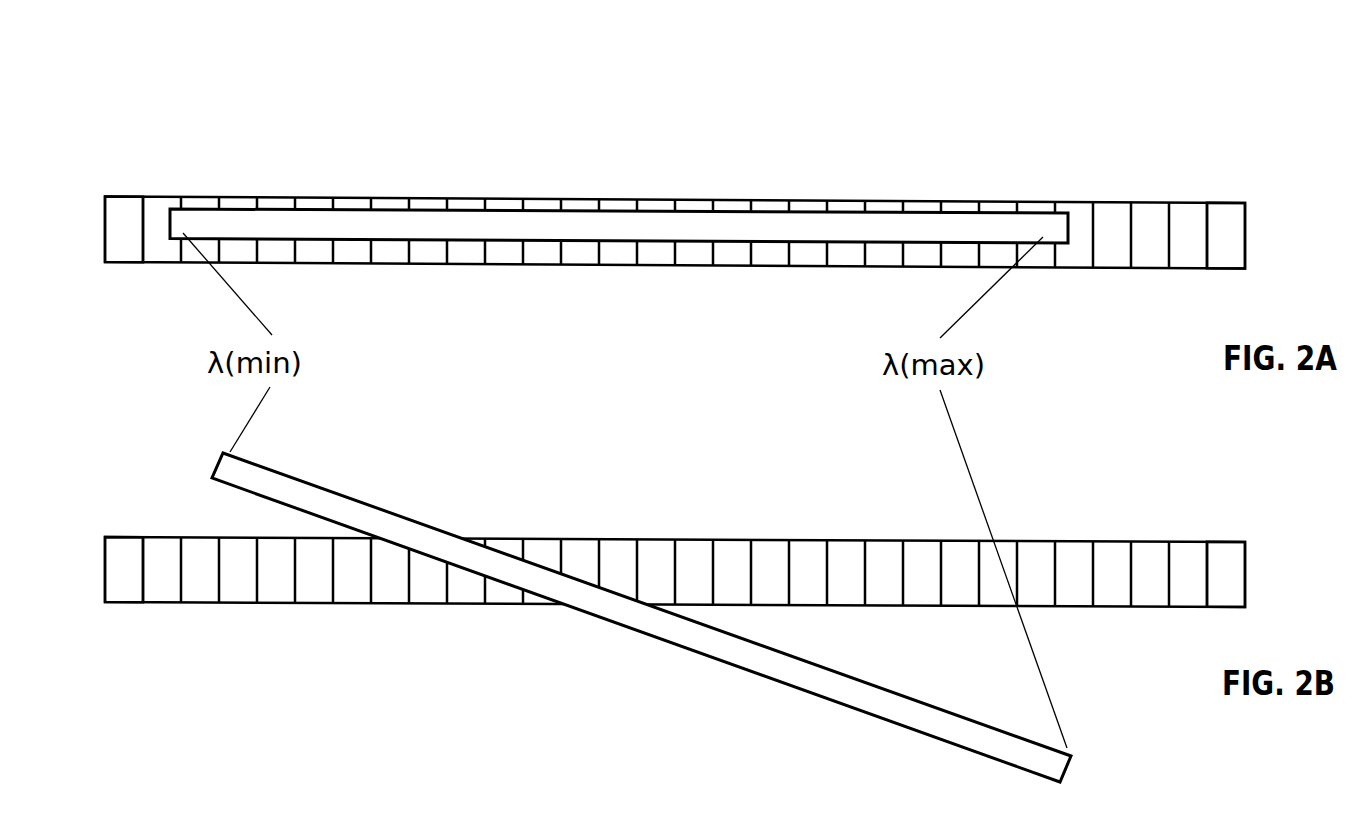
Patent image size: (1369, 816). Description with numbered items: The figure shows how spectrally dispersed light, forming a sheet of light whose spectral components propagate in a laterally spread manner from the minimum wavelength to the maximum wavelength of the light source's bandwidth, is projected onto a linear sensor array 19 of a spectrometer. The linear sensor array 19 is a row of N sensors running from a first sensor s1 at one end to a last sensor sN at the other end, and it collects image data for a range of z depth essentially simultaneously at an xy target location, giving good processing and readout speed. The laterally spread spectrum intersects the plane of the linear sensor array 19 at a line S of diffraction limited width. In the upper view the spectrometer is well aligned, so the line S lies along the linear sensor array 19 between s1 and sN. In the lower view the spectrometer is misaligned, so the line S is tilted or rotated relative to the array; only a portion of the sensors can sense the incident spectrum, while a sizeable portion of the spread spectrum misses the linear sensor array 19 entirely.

In FIG. 2A, the linear sensor array 19 is at (615, 265).
In FIG. 2B, the linear sensor array 19 is at (647, 538).
In FIG. 2A, the first sensor s1 is at (120, 263).
In FIG. 2B, the first sensor s1 is at (120, 535).
In FIG. 2A, the last sensor sN is at (1220, 263).
In FIG. 2B, the last sensor sN is at (1213, 542).
In FIG. 2A, the line of intersection S is at (613, 222).
In FIG. 2B, the line of intersection S is at (605, 622).